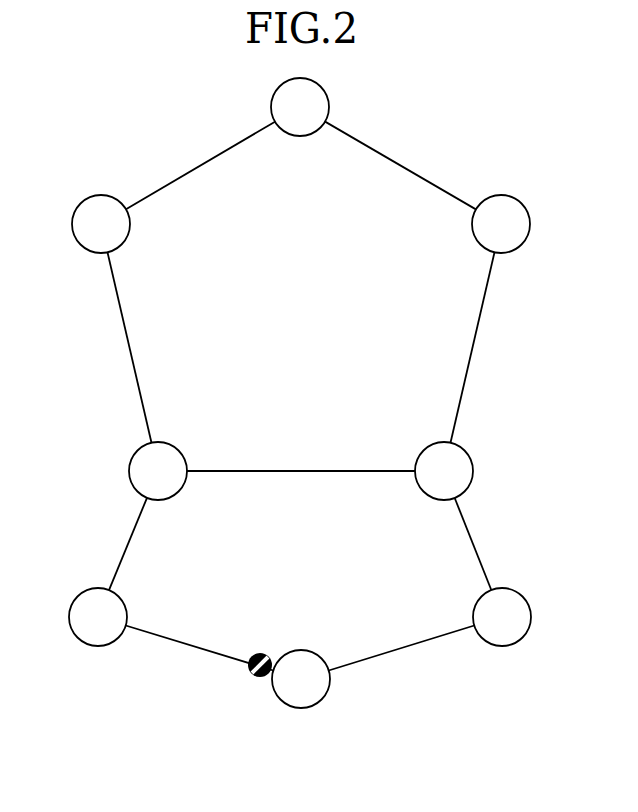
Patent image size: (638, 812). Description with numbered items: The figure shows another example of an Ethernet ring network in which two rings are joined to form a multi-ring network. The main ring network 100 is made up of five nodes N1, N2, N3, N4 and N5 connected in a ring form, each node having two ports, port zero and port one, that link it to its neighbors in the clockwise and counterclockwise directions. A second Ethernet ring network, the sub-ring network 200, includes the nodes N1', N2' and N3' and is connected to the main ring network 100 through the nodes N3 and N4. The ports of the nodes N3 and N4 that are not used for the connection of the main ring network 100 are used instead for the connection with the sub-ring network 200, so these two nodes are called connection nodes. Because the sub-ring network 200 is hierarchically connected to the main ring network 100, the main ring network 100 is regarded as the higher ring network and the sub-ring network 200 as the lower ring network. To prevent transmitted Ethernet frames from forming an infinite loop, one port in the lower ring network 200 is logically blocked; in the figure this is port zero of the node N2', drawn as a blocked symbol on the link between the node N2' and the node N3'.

The main ring network 100 is at (301, 289).
The sub-ring network 200 is at (300, 603).
The node N1 is at (300, 107).
The node N2 is at (501, 224).
The connection node N3 is at (444, 471).
The connection node N4 is at (143, 483).
The node N5 is at (86, 236).
The node N1' is at (502, 617).
The node N2' is at (301, 679).
The node N3' is at (98, 617).